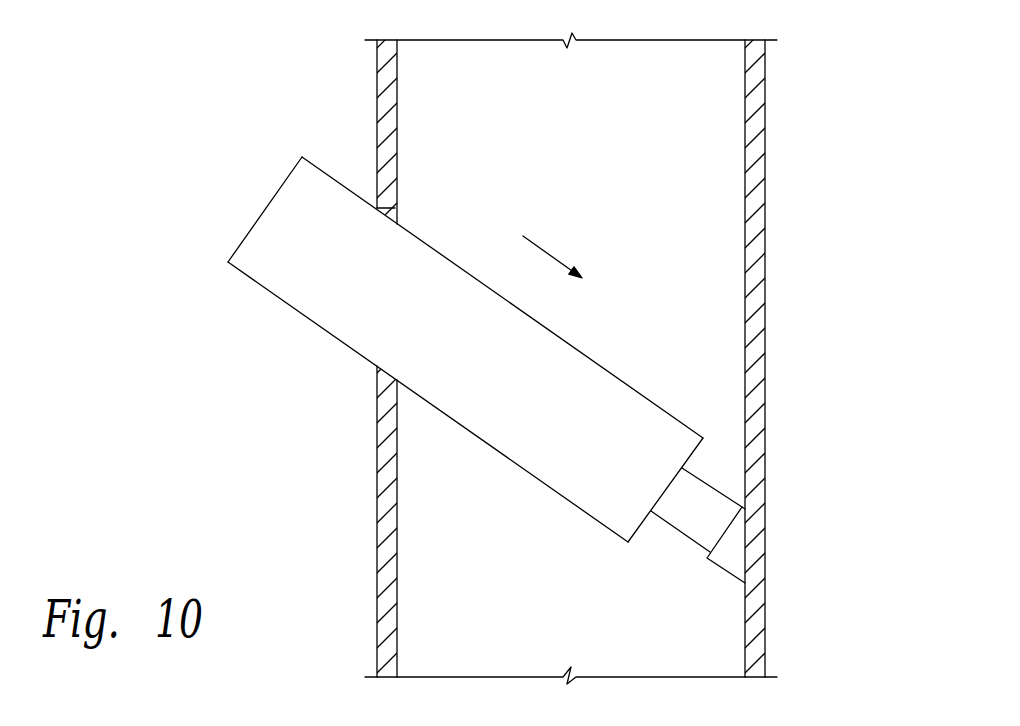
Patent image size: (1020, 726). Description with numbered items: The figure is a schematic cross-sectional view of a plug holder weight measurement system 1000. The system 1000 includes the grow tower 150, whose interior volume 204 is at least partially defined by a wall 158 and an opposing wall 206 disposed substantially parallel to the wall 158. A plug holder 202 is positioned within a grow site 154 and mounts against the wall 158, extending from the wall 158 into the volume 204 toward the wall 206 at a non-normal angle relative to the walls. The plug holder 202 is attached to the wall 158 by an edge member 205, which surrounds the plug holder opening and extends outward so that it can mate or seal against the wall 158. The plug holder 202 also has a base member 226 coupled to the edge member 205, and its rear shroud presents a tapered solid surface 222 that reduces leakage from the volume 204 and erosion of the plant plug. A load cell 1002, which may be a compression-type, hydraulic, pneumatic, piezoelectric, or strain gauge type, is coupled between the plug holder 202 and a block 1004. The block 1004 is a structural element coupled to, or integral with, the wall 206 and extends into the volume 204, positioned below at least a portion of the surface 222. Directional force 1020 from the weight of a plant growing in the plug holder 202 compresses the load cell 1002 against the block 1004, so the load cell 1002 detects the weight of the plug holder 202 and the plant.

The grow tower 150 is at (790, 237).
The grow site 154 is at (262, 316).
The wall 158 is at (377, 601).
The plug holder 202 is at (441, 369).
The interior volume 204 is at (554, 122).
The edge member 205 is at (267, 205).
The wall 206 is at (745, 103).
The surface 222 is at (602, 366).
The base member 226 is at (595, 519).
The plug holder weight measurement system 1000 is at (180, 520).
The load cell 1002 is at (680, 534).
The block 1004 is at (728, 576).
The directional force 1020 is at (548, 250).